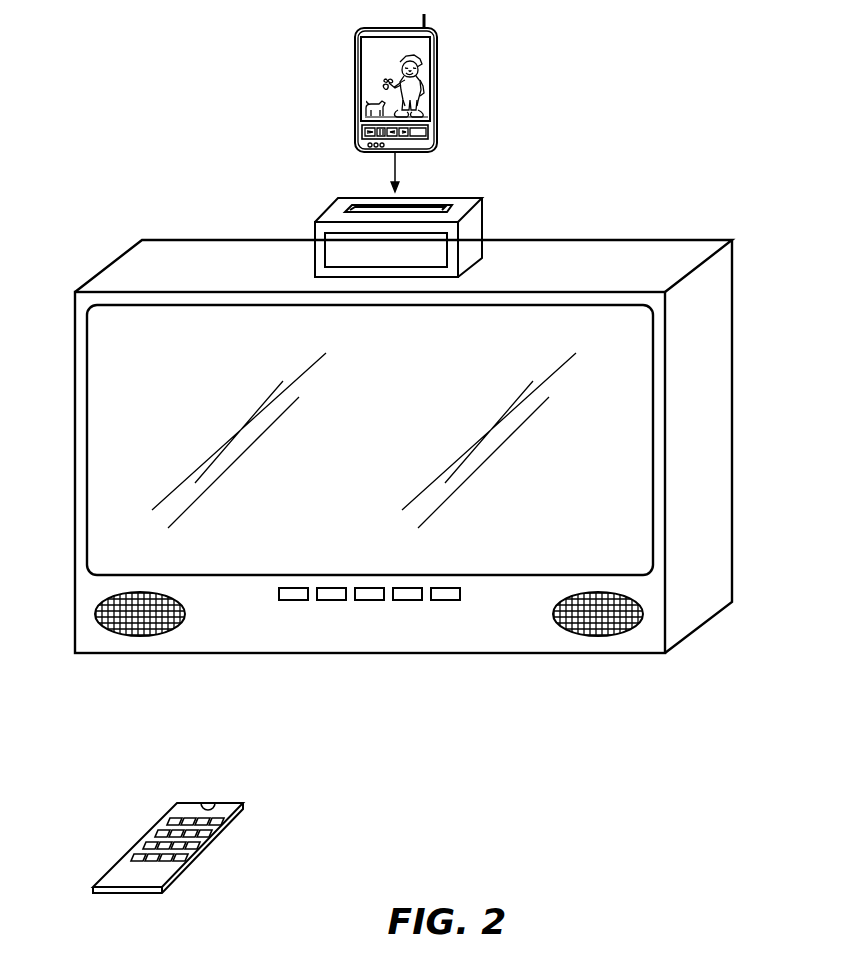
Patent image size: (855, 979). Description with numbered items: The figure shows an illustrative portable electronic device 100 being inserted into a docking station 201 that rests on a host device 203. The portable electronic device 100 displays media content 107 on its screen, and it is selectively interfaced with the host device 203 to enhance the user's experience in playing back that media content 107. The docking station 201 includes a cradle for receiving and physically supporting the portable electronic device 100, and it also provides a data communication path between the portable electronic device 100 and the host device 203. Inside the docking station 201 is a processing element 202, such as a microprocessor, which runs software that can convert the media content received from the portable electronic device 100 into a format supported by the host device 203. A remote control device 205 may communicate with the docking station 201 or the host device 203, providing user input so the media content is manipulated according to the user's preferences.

The portable electronic device 100 is at (402, 83).
The media content 107 is at (377, 89).
The docking station 201 is at (398, 236).
The processing element 202 is at (325, 249).
The host device 203 is at (680, 298).
The remote control device 205 is at (188, 810).